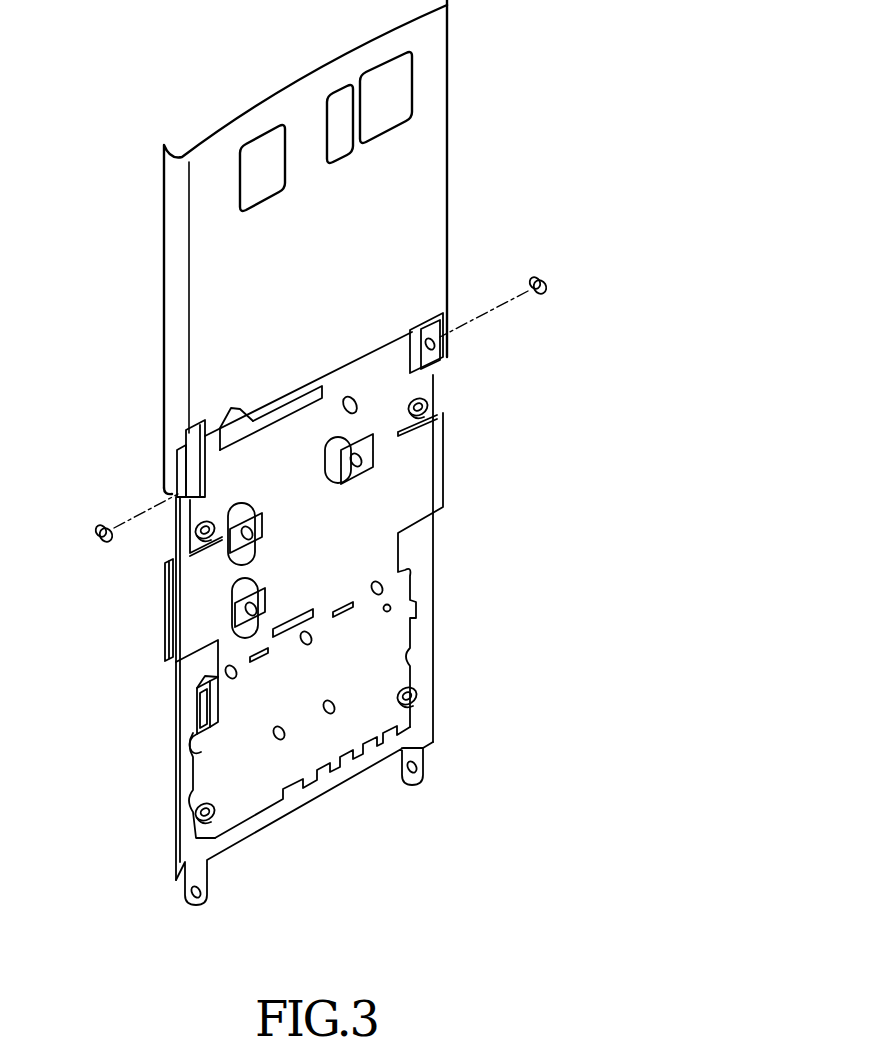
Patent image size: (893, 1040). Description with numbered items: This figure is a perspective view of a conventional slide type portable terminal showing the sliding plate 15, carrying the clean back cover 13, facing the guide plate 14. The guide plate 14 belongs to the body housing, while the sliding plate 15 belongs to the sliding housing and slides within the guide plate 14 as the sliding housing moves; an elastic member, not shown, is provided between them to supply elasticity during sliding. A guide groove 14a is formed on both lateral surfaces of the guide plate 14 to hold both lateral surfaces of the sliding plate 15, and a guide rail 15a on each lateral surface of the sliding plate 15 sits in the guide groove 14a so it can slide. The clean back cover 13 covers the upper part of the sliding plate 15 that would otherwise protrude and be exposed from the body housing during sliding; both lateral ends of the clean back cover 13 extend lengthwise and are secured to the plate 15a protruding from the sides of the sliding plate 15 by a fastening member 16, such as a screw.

The clean back cover 13 is at (428, 190).
The guide plate 14 is at (405, 644).
The guide groove 14a is at (160, 566).
The sliding plate 15 is at (430, 541).
The guide rail 15a is at (170, 672).
The fastening member 16 is at (548, 281).